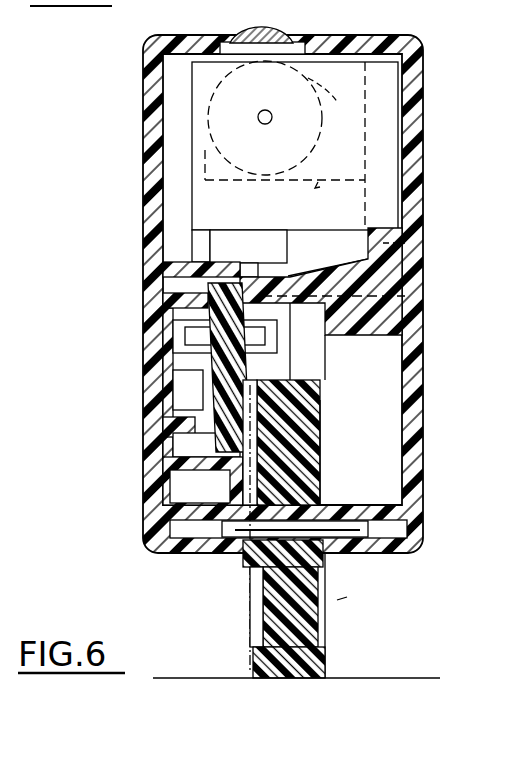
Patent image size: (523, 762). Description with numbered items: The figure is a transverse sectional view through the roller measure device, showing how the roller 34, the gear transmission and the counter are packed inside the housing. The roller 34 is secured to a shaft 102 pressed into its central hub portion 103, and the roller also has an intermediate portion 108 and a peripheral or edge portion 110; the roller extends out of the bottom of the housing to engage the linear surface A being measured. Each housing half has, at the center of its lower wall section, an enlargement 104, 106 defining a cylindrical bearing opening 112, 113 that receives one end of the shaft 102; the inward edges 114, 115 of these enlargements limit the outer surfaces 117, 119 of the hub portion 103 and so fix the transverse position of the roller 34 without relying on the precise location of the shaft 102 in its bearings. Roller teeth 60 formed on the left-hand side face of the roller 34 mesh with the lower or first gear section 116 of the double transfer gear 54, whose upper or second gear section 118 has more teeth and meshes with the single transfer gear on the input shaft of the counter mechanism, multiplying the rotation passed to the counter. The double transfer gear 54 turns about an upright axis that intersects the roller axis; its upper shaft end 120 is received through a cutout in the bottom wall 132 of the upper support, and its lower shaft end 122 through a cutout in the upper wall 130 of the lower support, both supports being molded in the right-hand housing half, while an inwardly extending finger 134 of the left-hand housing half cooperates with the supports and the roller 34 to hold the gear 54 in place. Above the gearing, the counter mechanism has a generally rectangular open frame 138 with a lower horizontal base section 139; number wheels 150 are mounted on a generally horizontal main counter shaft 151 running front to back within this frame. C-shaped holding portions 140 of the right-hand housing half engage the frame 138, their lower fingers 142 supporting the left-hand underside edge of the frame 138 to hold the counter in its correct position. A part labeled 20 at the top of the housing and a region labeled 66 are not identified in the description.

The cap 20 is at (282, 42).
The roller 34 is at (336, 601).
The double transfer gear 54 is at (165, 333).
The roller teeth 60 is at (265, 385).
The chamber 66 is at (290, 370).
The roller shaft 102 is at (236, 554).
The central hub portion 103 is at (251, 570).
The enlargement 104 is at (172, 491).
The enlargement 106 is at (388, 503).
The intermediate portion 108 is at (318, 622).
The peripheral edge portion 110 is at (284, 680).
The cylindrical bearing opening 112 is at (190, 535).
The cylindrical bearing opening 113 is at (392, 533).
The inward edge 114 is at (247, 502).
The inward edge 115 is at (323, 507).
The first gear section 116 is at (188, 377).
The outer surface of hub portion 117 is at (248, 507).
The second gear section 118 is at (178, 303).
The outer surface of hub portion 119 is at (323, 503).
The upper shaft end 120 is at (182, 263).
The lower shaft end 122 is at (314, 418).
The upper wall of lower support 130 is at (192, 421).
The bottom wall of upper support 132 is at (167, 281).
The finger 134 is at (260, 278).
The counter frame 138 is at (378, 144).
The frame base section 139 is at (318, 186).
The C-shaped holding portion 140 is at (173, 173).
The lower finger 142 is at (197, 248).
The number wheels 150 is at (285, 145).
The main counter shaft 151 is at (262, 112).
The surface to be measured A is at (400, 675).